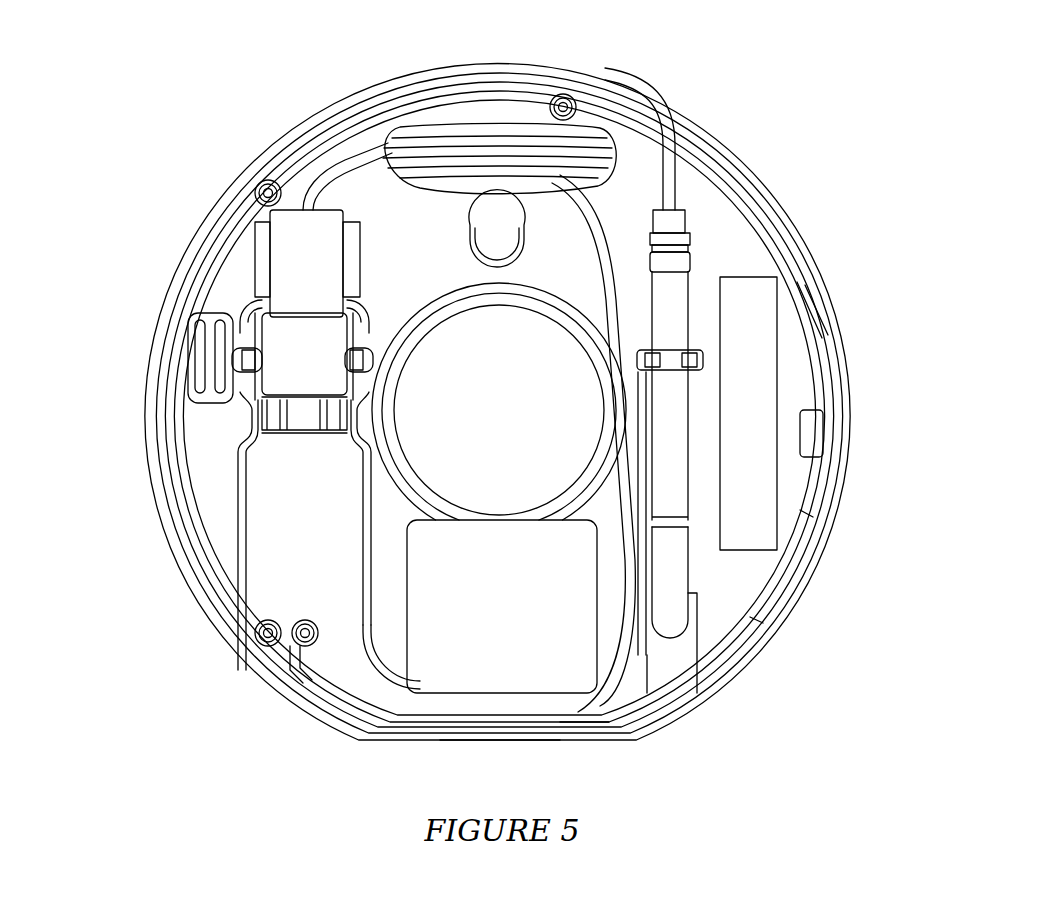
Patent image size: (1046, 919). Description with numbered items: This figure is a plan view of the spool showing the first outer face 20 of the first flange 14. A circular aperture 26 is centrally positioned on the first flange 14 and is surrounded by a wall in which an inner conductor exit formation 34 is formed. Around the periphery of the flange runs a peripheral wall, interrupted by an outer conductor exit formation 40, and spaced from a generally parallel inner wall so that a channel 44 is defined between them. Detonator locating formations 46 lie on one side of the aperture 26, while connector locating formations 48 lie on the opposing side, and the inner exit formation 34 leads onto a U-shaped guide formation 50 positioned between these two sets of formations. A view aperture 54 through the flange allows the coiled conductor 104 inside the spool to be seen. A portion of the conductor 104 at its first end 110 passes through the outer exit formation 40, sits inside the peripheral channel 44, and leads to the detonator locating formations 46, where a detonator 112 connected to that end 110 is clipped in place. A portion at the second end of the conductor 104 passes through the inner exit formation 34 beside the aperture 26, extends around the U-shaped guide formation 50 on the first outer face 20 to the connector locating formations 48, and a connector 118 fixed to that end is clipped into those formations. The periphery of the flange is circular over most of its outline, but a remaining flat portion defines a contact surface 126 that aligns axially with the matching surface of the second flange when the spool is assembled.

The first flange 14 is at (722, 136).
The first outer face 20 is at (716, 255).
The circular aperture 26 is at (490, 428).
The inner conductor exit formation 34 is at (406, 418).
The outer conductor exit formation 40 is at (869, 423).
The channel 44 is at (657, 710).
The detonator locating formations 46 is at (697, 350).
The connector locating formations 48 is at (373, 252).
The U-shaped guide formation 50 is at (373, 517).
The view aperture 54 is at (420, 112).
The conductor 104 is at (588, 150).
The first end 110 is at (667, 197).
The detonator 112 is at (667, 440).
The connector 118 is at (294, 278).
The contact surface 126 is at (483, 740).